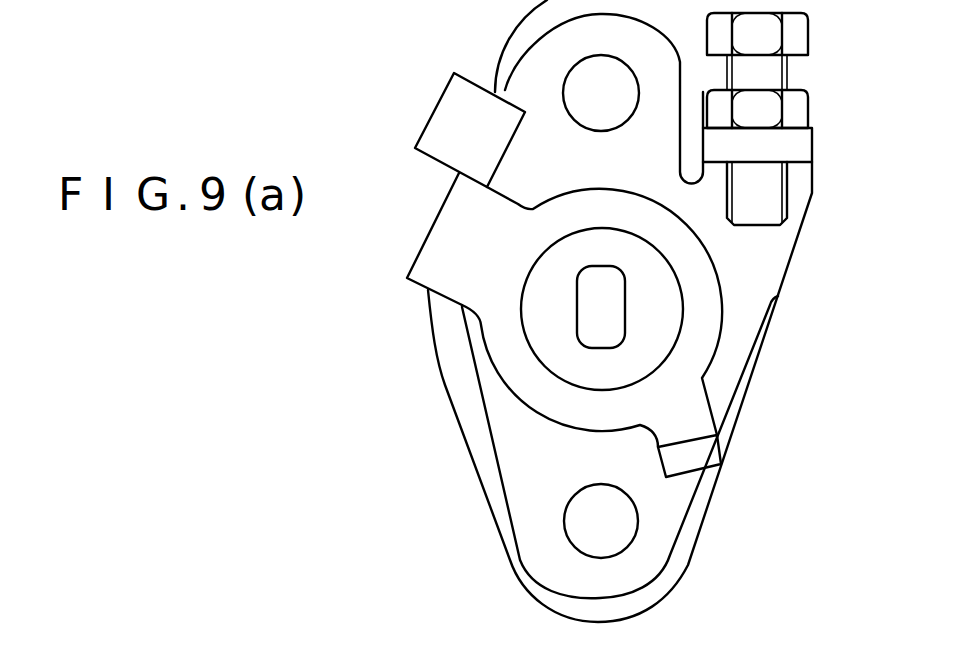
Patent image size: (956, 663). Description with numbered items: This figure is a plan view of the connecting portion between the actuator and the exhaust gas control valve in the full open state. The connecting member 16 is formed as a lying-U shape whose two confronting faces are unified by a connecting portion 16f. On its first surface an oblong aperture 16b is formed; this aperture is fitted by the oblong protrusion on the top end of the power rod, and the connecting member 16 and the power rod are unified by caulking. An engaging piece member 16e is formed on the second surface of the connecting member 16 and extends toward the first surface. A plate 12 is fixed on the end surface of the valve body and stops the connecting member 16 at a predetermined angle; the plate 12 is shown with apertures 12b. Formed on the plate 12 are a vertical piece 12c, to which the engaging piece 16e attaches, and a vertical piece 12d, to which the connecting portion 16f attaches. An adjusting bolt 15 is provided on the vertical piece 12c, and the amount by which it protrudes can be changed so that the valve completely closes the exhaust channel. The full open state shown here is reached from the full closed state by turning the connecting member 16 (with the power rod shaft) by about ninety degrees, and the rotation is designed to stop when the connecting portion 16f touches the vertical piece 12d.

The plate 12 is at (650, 547).
The mounting holes 12b is at (571, 92).
The vertical piece 12c is at (795, 150).
The vertical piece 12d is at (450, 130).
The adjusting bolt 15 is at (767, 77).
The connecting member 16 is at (695, 358).
The oblong aperture 16b is at (585, 325).
The engaging piece member 16e is at (702, 455).
The connecting portion 16f is at (445, 235).